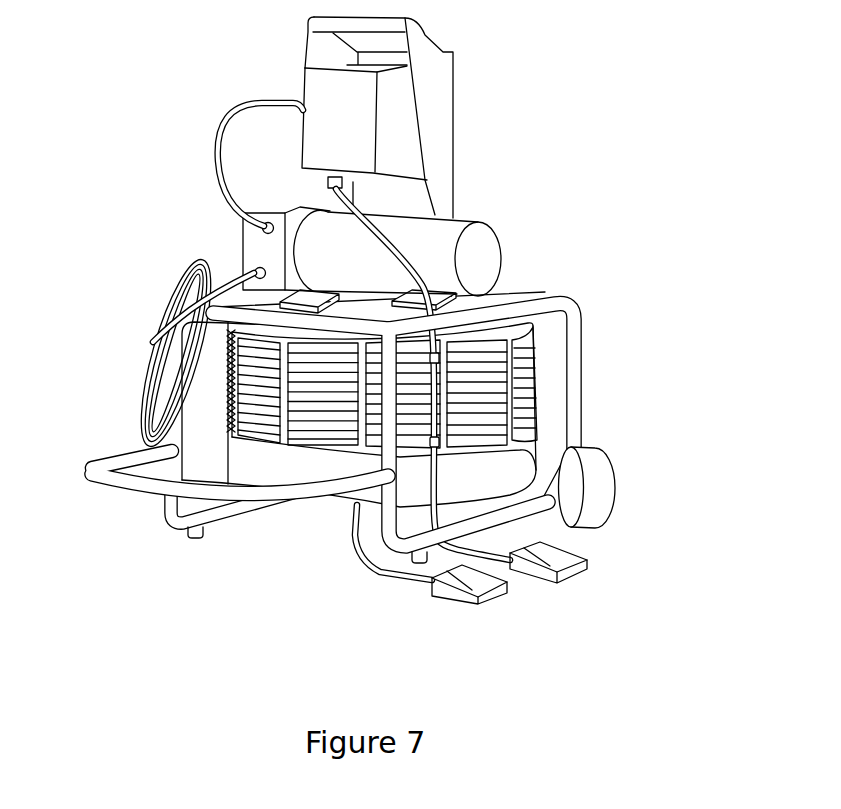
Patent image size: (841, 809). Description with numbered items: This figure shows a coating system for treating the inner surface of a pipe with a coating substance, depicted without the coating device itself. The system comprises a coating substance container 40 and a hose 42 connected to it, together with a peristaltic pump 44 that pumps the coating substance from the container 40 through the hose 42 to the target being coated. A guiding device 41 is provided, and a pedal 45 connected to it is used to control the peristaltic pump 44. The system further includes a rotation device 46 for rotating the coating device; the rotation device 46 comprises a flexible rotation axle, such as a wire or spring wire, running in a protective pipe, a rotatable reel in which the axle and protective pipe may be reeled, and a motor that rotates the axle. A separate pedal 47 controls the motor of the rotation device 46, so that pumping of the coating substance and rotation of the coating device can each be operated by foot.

The coating substance container 40 is at (253, 243).
The guiding device 41 is at (306, 74).
The hose 42 is at (163, 307).
The peristaltic pump 44 is at (488, 250).
The pedal 45 is at (573, 568).
The rotation device 46 is at (527, 450).
The pedal 47 is at (492, 588).